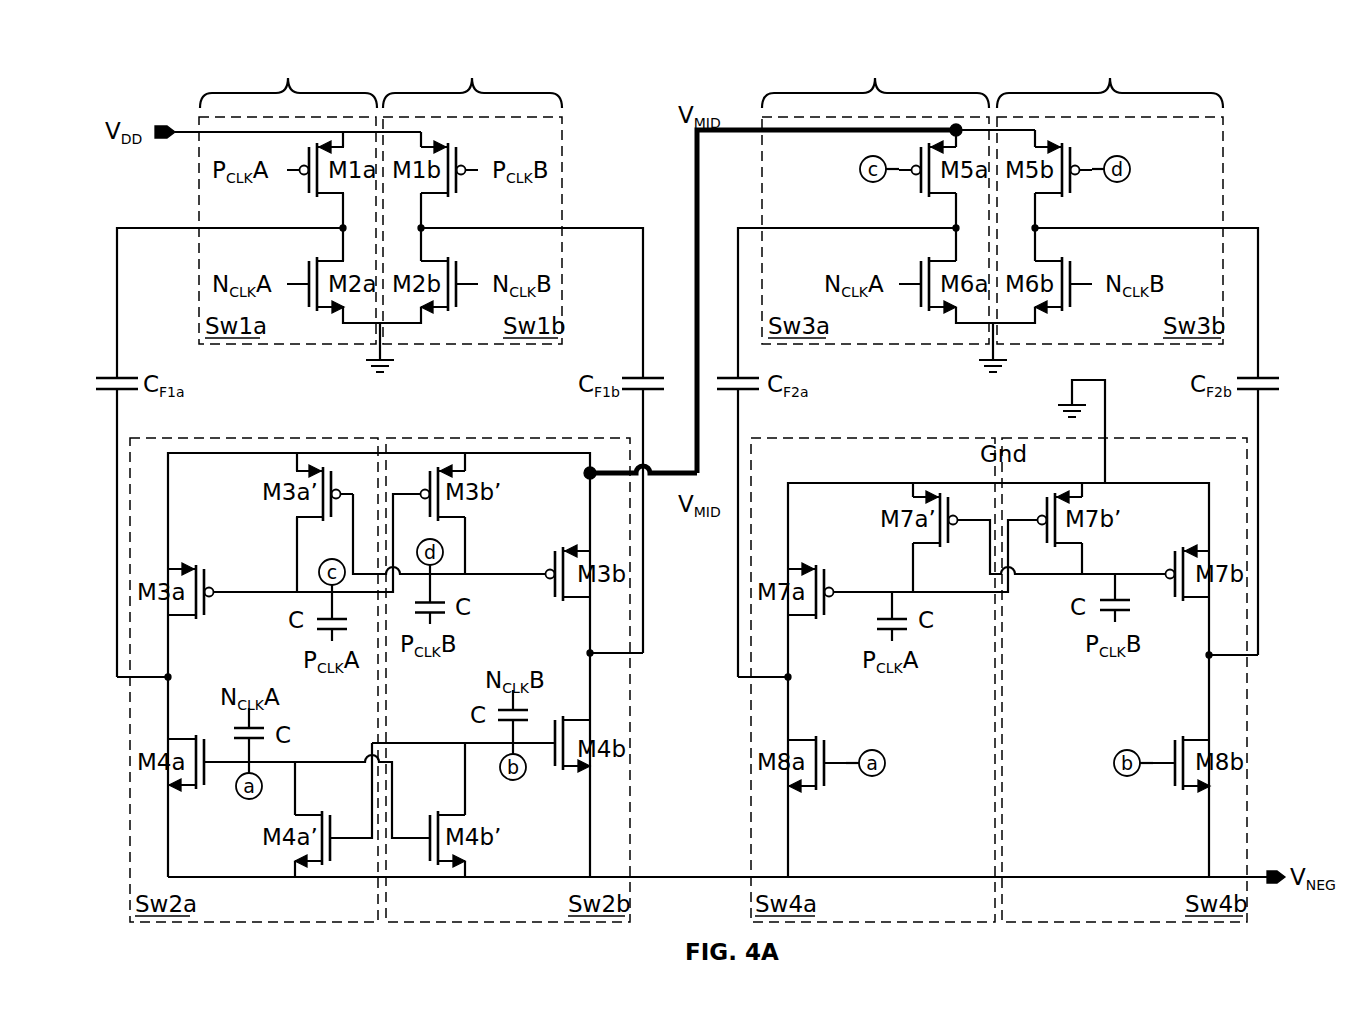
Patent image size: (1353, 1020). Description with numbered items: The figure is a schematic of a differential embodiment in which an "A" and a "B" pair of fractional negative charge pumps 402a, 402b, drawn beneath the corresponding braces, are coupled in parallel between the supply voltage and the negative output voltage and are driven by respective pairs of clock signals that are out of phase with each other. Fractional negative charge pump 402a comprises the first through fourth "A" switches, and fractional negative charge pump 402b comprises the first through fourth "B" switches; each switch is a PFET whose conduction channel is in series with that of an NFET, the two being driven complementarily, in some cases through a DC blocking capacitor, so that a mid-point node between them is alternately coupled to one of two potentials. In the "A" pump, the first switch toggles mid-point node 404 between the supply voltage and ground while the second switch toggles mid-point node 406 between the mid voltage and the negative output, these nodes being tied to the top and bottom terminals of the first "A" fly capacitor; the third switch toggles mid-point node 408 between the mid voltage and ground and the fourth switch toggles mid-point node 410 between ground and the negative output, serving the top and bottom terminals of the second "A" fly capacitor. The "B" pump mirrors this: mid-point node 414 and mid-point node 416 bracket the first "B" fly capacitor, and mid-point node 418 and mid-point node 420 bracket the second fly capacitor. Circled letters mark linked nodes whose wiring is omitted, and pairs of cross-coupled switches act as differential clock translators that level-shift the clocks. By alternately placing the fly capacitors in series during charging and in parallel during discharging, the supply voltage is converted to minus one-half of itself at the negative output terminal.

The fractional negative charge pump 402a is at (315, 67).
The fractional negative charge pump 402b is at (500, 67).
The mid-point node 404 is at (341, 227).
The mid-point node 414 is at (424, 227).
The mid-point node 408 is at (953, 230).
The mid-point node 418 is at (1039, 230).
The mid-point node 406 is at (172, 677).
The mid-point node 416 is at (588, 652).
The mid-point node 410 is at (790, 678).
The mid-point node 420 is at (1207, 657).